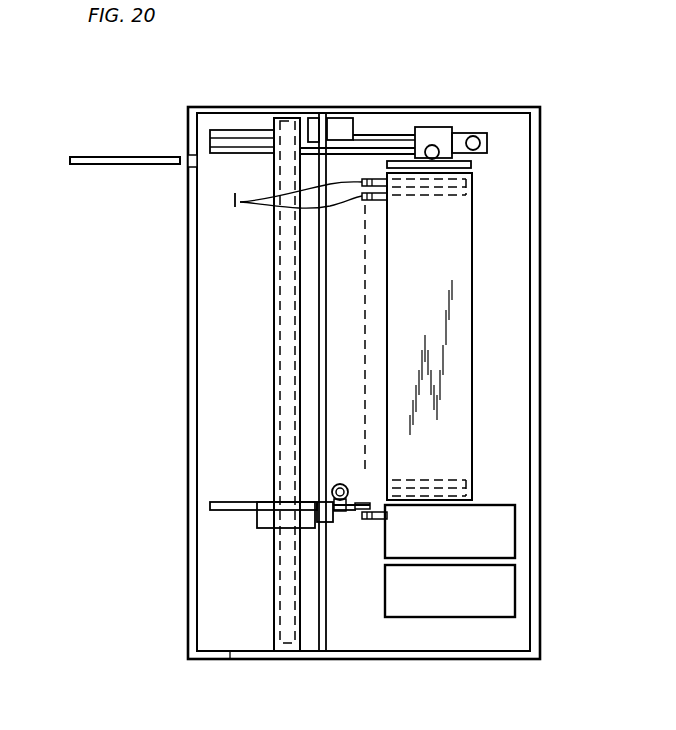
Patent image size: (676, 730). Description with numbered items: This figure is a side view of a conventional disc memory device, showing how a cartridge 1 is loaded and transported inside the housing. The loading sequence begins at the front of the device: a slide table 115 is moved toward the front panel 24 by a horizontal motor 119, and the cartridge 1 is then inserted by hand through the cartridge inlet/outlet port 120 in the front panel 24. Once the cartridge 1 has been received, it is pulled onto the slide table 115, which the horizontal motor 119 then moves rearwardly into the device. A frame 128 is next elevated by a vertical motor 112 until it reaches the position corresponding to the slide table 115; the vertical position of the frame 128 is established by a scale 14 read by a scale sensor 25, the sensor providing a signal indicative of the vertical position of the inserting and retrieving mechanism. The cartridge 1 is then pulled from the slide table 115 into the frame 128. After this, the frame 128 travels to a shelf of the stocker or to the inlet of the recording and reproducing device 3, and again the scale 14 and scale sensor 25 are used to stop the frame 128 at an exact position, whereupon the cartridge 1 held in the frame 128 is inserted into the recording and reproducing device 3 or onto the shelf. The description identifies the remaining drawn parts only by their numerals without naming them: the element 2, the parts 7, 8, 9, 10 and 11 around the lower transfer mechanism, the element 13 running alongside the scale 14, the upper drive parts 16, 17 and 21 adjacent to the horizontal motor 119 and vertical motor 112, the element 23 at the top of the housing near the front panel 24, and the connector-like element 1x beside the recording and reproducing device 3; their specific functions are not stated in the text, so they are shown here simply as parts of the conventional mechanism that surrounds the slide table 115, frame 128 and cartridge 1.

The cartridge 1 is at (108, 155).
The cassette 2 is at (472, 322).
The recording and reproducing device 3 is at (508, 532).
The lever block 7 is at (258, 522).
The guide column 8 is at (274, 380).
The latch 9 is at (330, 524).
The roller 10 is at (334, 484).
The pin 11 is at (364, 510).
The slider 13 is at (292, 262).
The scale 14 is at (319, 322).
The belt 16 is at (390, 130).
The motor 17 is at (445, 130).
The pulley 21 is at (432, 128).
The inner housing 23 is at (251, 107).
The front panel 24 is at (188, 628).
The scale sensor 25 is at (317, 502).
The vertical motor 112 is at (340, 118).
The slide table 115 is at (472, 164).
The horizontal motor 119 is at (490, 133).
The cartridge inlet/outlet port 120 is at (190, 162).
The frame 128 is at (210, 505).
The connector 1x is at (372, 520).